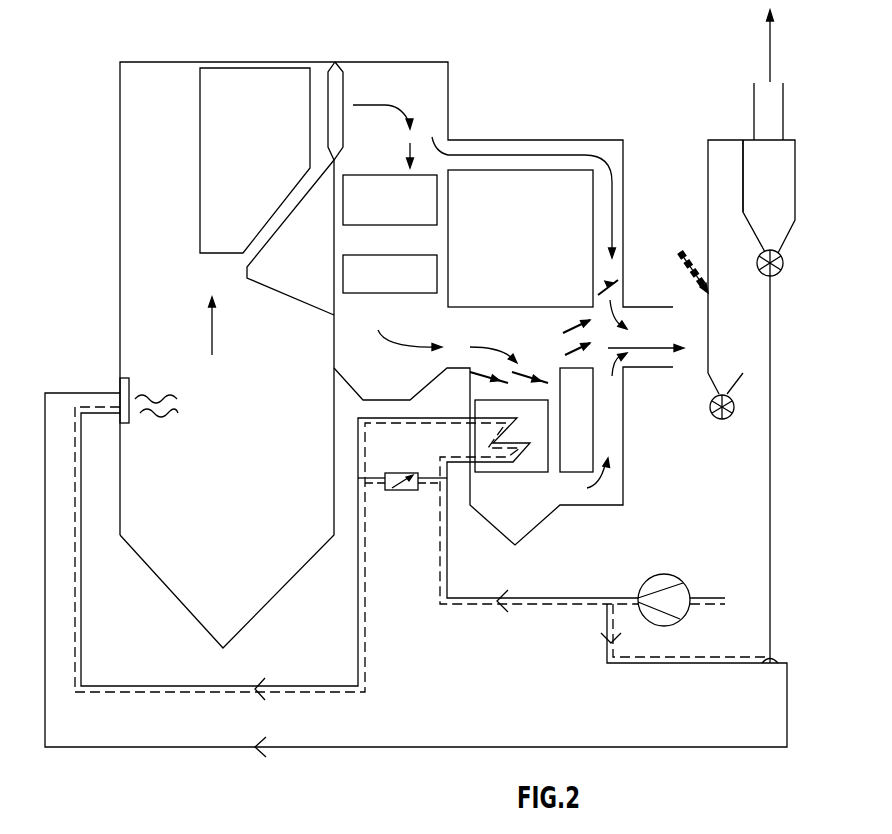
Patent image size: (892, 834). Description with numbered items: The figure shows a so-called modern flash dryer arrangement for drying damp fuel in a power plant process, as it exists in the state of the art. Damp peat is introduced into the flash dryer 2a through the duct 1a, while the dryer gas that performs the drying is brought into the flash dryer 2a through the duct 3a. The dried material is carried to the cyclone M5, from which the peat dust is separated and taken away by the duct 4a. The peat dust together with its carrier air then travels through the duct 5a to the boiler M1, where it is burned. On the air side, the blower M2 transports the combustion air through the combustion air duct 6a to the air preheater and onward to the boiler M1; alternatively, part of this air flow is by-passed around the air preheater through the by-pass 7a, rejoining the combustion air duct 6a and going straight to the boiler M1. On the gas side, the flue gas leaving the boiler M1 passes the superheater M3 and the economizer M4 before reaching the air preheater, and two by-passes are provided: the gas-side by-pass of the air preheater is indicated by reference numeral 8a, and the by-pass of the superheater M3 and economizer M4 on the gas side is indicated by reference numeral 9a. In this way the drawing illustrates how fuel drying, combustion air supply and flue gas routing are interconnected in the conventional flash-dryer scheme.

The duct 1a is at (680, 262).
The flash dryer 2a is at (736, 339).
The duct 3a is at (674, 339).
The duct 4a is at (772, 405).
The duct 5a is at (612, 746).
The combustion air duct 6a is at (307, 686).
The by-pass 7a is at (400, 490).
The gas-side by-pass of the air preheater 8a is at (550, 360).
The by-pass of the superheater and economizer 9a is at (617, 182).
The boiler M1 is at (396, 355).
The blower M2 is at (665, 582).
The superheater M3 is at (380, 185).
The economizer M4 is at (402, 293).
The cyclone M5 is at (782, 208).